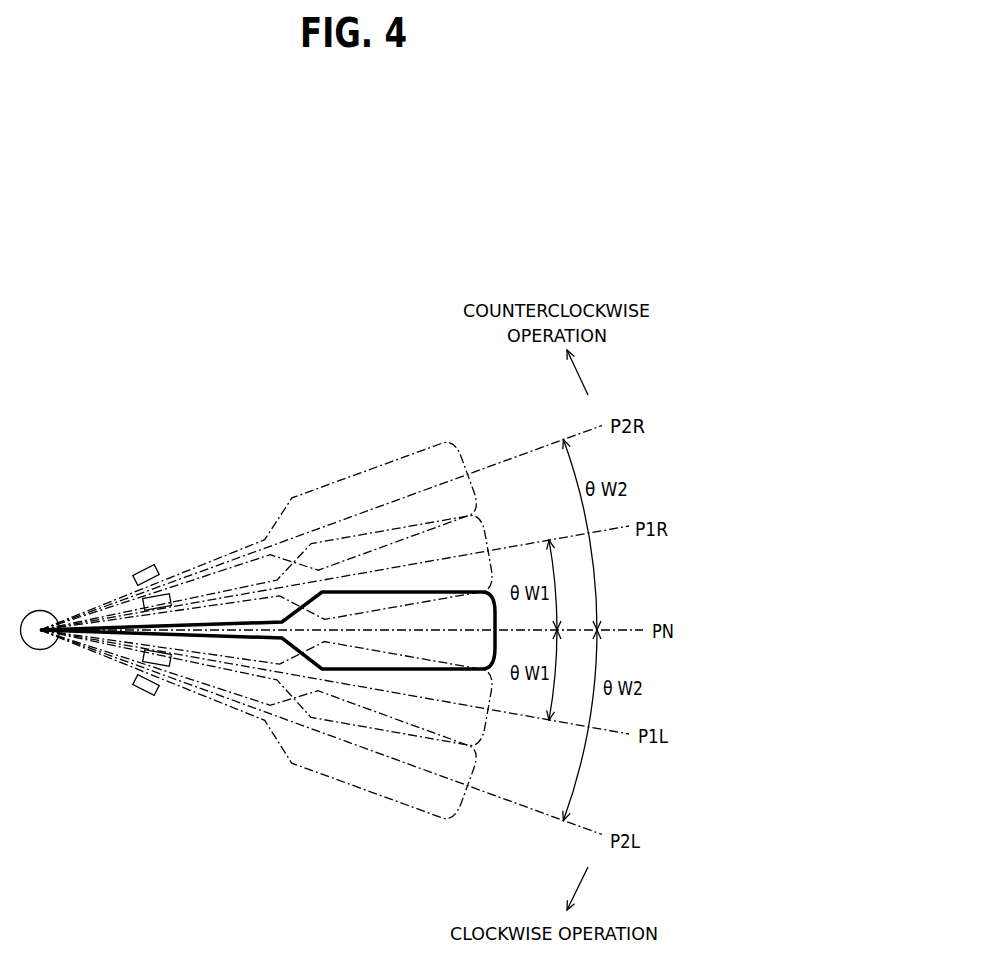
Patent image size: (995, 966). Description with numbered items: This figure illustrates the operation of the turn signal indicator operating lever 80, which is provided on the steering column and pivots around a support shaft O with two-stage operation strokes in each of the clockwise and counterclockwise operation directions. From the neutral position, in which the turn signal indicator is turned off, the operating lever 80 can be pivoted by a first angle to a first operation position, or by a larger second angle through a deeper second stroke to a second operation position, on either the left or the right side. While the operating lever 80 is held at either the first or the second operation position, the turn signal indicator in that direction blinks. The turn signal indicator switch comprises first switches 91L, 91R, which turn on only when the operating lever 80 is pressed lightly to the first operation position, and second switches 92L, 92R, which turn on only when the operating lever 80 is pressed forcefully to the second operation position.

The turn signal indicator operating lever 80 is at (457, 453).
The support shaft O is at (38, 608).
The first switch 91R is at (173, 597).
The first switch 91L is at (173, 664).
The second switch 92R is at (140, 565).
The second switch 92L is at (140, 695).